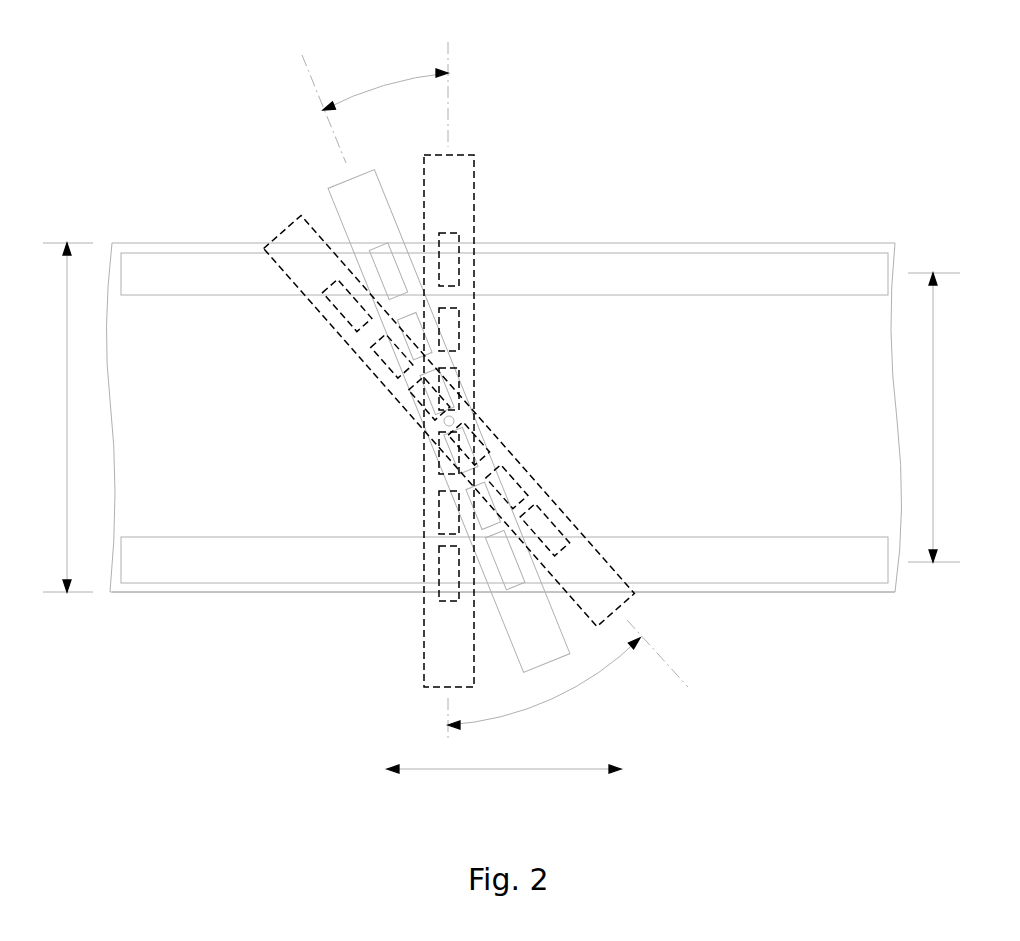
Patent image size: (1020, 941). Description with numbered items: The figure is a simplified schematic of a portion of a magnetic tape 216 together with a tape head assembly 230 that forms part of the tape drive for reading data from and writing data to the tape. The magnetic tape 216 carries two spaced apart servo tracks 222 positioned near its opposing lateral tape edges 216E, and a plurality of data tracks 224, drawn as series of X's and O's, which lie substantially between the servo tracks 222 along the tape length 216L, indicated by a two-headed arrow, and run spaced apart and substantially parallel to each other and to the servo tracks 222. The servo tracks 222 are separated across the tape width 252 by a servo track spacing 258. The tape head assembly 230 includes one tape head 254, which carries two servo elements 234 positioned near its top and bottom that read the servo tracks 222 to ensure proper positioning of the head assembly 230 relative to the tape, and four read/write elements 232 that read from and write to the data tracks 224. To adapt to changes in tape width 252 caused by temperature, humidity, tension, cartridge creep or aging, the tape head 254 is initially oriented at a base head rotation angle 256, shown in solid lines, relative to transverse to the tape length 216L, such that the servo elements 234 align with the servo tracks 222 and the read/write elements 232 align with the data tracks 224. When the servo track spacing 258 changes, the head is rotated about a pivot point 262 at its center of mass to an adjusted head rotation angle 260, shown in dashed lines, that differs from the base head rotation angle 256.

The magnetic tape 216 is at (717, 242).
The lateral tape edge 216E is at (203, 592).
The tape length 216L is at (557, 770).
The servo track 222 is at (583, 268).
The data track 224 is at (640, 333).
The tape head assembly 230 is at (326, 190).
The read/write element 232 is at (418, 340).
The servo element 234 is at (388, 270).
The tape width 252 is at (68, 417).
The tape head 254 is at (355, 220).
The base head rotation angle 256 is at (372, 82).
The servo track spacing 258 is at (934, 417).
The adjusted head rotation angle 260 is at (600, 678).
The pivot point 262 is at (445, 430).